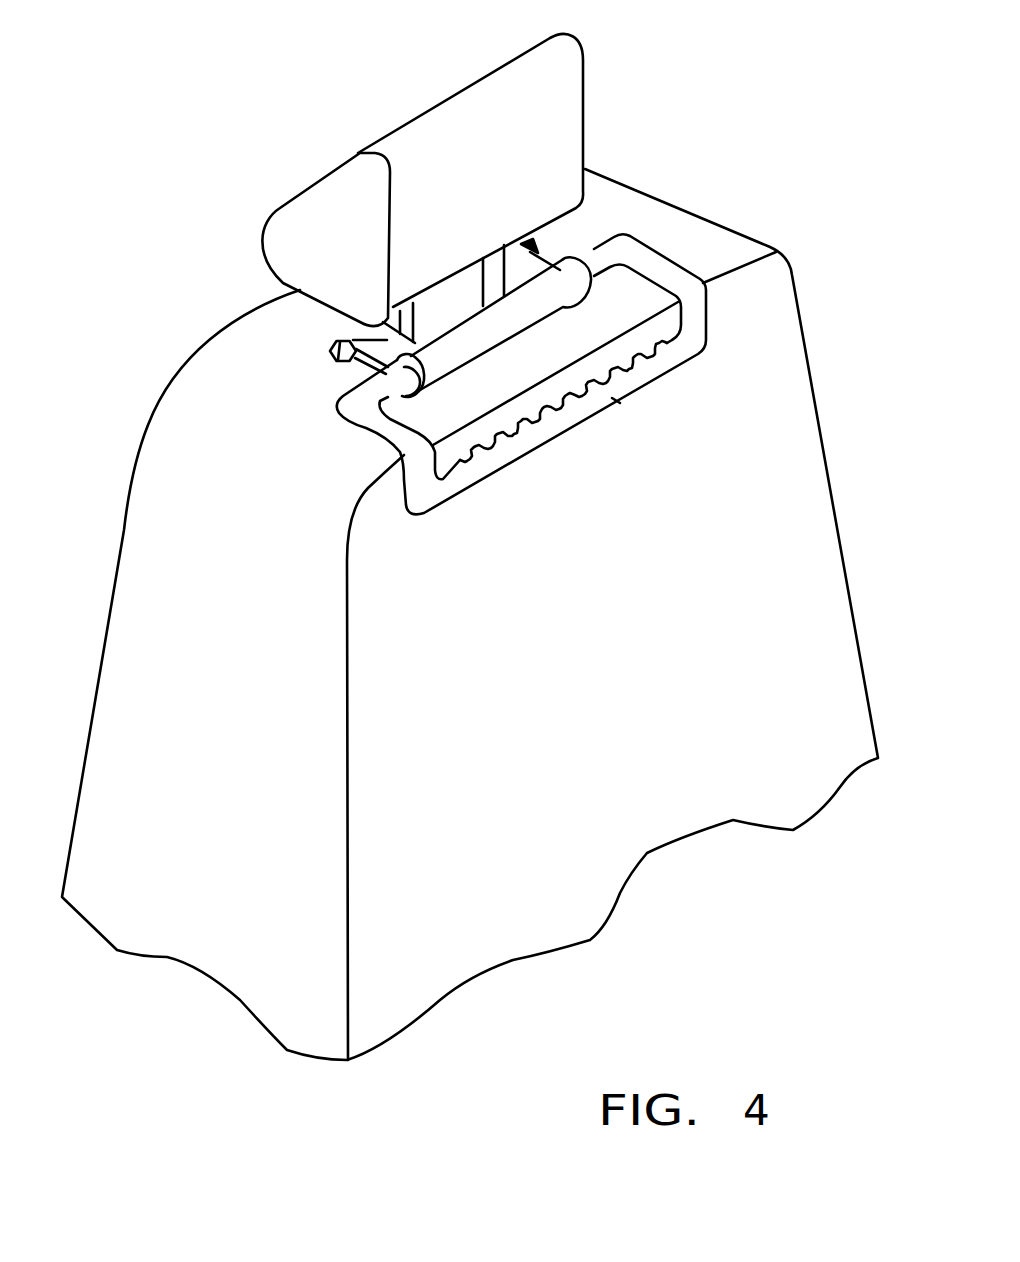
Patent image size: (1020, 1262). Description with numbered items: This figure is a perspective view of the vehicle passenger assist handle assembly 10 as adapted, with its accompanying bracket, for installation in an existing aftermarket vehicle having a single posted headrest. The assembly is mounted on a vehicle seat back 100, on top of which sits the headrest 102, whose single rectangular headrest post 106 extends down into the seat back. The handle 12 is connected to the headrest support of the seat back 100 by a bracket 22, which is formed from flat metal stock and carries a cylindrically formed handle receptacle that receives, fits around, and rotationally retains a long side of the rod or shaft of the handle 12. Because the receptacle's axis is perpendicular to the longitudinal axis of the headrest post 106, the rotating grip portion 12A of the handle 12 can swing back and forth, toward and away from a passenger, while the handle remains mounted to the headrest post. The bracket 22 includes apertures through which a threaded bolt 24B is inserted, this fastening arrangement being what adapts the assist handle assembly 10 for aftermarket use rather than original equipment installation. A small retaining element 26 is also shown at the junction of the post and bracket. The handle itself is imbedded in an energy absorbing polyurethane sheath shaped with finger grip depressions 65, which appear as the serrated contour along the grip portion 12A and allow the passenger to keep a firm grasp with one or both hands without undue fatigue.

The vehicle passenger assist handle assembly 10 is at (505, 533).
The handle 12 is at (703, 307).
The grip portion 12A is at (620, 403).
The bracket 22 is at (353, 340).
The threaded bolt 24B is at (330, 353).
The retaining tab 26 is at (527, 243).
The finger grip depressions 65 is at (343, 430).
The vehicle seat back 100 is at (703, 240).
The headrest 102 is at (333, 227).
The headrest post 106 is at (480, 283).